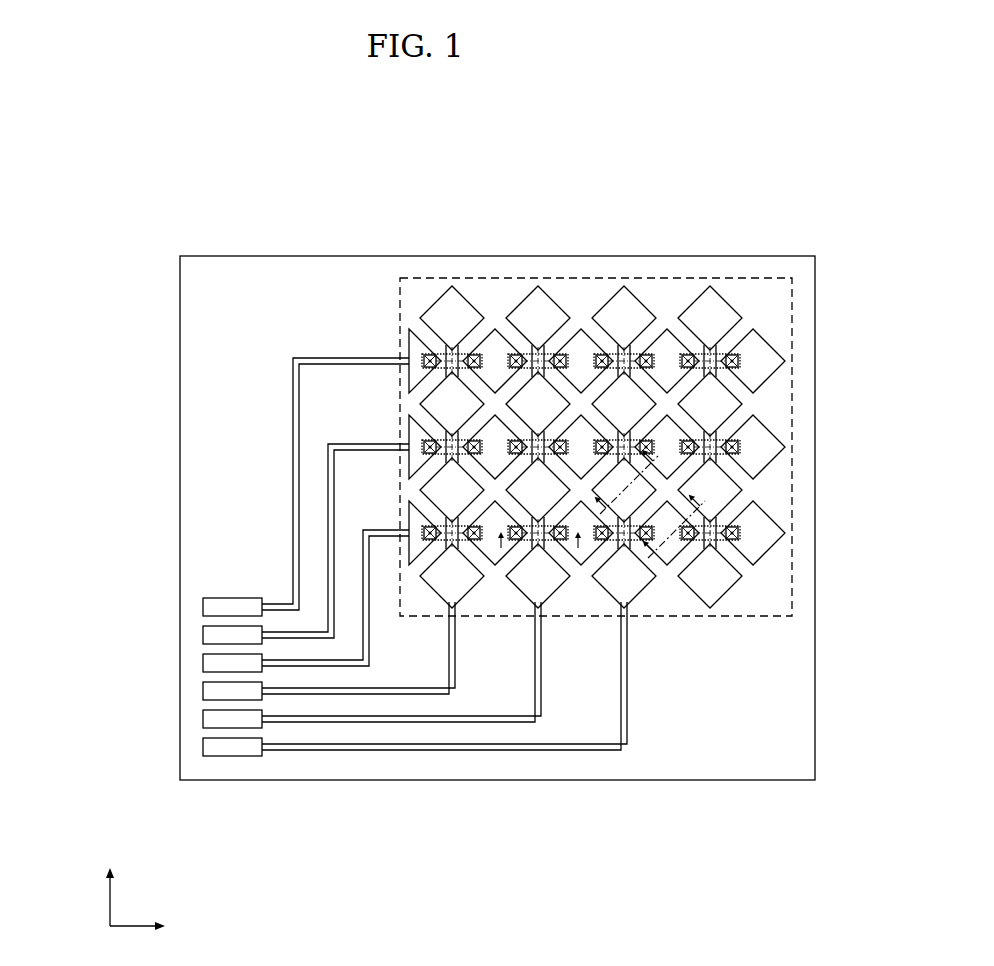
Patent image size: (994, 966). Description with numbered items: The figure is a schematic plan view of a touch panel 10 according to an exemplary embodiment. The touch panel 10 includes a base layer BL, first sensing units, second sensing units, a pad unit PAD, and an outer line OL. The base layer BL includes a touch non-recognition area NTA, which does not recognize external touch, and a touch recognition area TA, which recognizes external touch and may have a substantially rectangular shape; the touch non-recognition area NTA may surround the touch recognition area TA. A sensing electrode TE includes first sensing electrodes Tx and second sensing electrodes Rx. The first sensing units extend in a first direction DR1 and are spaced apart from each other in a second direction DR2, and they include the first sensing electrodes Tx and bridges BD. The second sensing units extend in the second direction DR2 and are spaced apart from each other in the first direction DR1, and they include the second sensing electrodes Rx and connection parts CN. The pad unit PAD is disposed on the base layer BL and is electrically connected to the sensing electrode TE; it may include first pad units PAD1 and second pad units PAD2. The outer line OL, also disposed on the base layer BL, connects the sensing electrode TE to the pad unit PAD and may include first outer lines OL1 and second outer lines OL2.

The touch panel 10 is at (742, 175).
The base layer BL is at (180, 466).
The touch non-recognition area NTA is at (341, 294).
The touch recognition area TA is at (423, 294).
The sensing electrode TE is at (540, 208).
The first sensing electrodes Tx is at (474, 345).
The second sensing electrodes Rx is at (516, 304).
The bridges BD is at (541, 355).
The connection parts CN is at (601, 356).
The pad unit PAD is at (88, 597).
The first pad units PAD1 is at (203, 604).
The second pad units PAD2 is at (203, 745).
The outer line OL is at (460, 837).
The first outer lines OL1 is at (278, 612).
The second outer lines OL2 is at (441, 753).
The first direction DR1 is at (157, 927).
The second direction DR2 is at (111, 888).